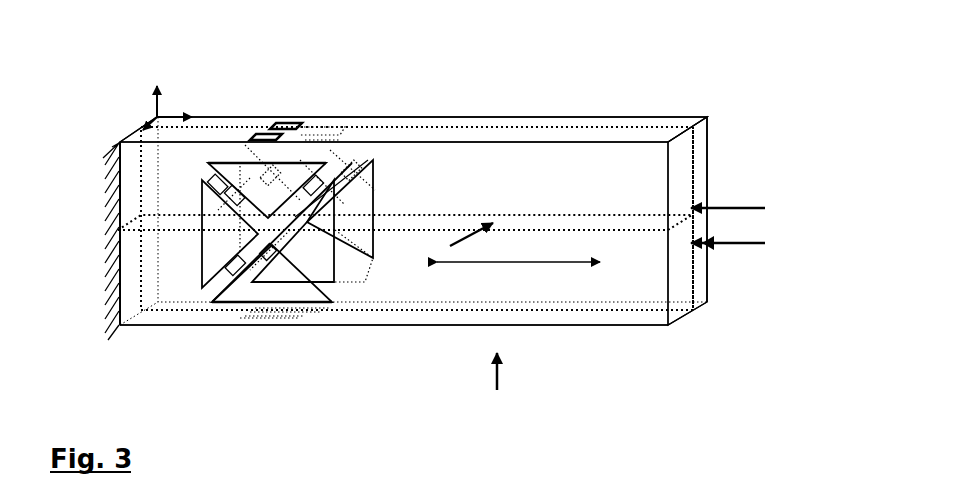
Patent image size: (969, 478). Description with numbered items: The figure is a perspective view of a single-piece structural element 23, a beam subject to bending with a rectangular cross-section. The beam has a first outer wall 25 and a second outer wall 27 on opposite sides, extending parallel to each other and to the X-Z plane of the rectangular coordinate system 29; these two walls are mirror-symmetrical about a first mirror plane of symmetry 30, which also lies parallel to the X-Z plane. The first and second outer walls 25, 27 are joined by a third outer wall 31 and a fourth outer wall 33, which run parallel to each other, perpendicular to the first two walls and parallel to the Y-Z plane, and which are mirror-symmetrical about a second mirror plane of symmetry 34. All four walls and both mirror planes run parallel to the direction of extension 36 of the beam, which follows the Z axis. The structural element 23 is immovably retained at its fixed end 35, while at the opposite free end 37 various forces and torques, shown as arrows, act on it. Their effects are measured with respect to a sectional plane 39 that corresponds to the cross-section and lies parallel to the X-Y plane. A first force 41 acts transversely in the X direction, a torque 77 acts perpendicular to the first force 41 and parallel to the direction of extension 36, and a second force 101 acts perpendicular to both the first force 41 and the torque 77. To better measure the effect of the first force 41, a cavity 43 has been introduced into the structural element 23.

The structural element 23 is at (618, 76).
The first outer wall 25 is at (576, 192).
The second outer wall 27 is at (719, 158).
The rectangular coordinate system 29 is at (163, 76).
The first mirror plane of symmetry 30 is at (695, 306).
The third outer wall 31 is at (470, 137).
The fourth outer wall 33 is at (590, 321).
The second mirror plane of symmetry 34 is at (423, 233).
The fixed end 35 is at (96, 220).
The direction of extension 36 is at (582, 262).
The free end 37 is at (731, 286).
The sectional plane 39 is at (280, 318).
The first force 41 is at (497, 392).
The cavity 43 is at (309, 164).
The torque 77 is at (752, 243).
The second force 101 is at (468, 232).